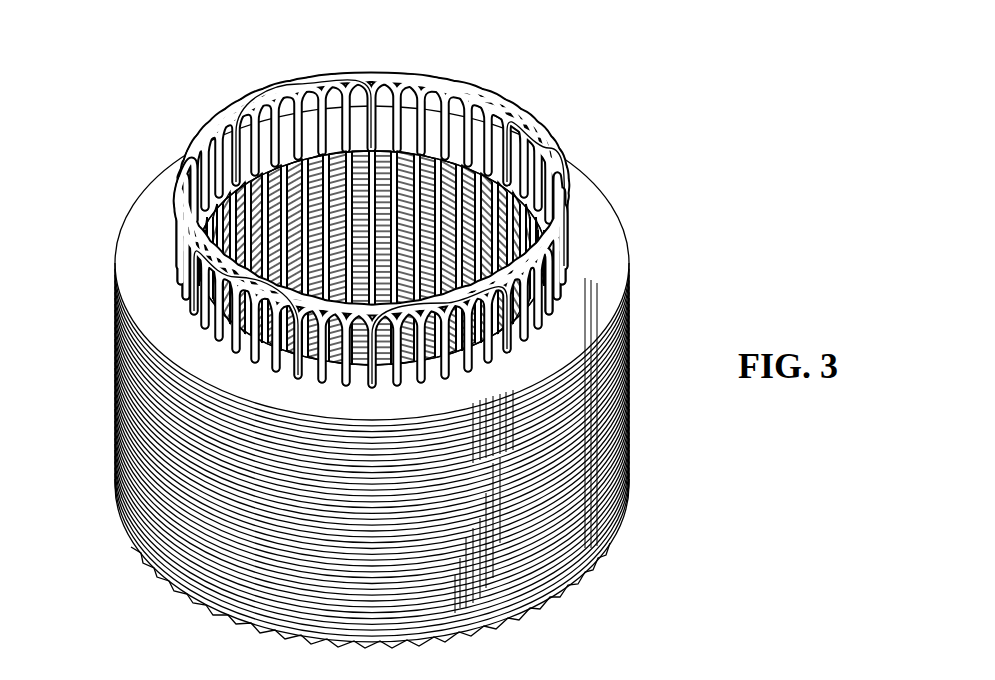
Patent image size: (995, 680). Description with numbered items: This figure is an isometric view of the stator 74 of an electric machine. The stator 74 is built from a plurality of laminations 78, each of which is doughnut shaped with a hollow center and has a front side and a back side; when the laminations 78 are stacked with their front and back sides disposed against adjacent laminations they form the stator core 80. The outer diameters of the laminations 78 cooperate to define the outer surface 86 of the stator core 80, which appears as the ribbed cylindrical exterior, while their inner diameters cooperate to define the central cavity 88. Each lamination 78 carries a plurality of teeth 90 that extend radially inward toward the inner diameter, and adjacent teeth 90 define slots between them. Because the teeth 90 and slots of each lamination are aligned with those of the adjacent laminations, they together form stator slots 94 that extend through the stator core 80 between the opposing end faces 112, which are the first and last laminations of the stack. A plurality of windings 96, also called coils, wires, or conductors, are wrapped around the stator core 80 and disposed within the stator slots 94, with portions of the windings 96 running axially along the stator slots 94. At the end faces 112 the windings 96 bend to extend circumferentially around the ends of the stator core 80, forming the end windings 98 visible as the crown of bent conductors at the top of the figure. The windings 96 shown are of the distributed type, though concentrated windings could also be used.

The stator 74 is at (563, 72).
The laminations 78 is at (598, 220).
The stator core 80 is at (622, 357).
The outer surface 86 is at (108, 372).
The cavity 88 is at (441, 190).
The teeth 90 is at (283, 128).
The stator slots 94 is at (503, 347).
The windings 96 is at (283, 363).
The end windings 98 is at (560, 167).
The end faces 112 is at (158, 160).